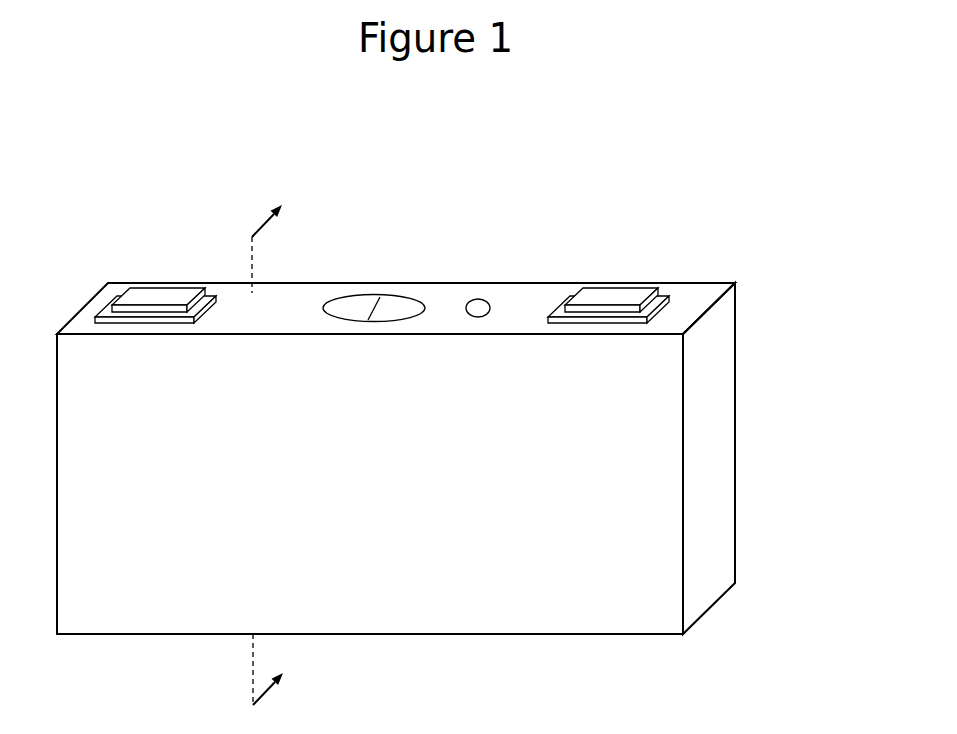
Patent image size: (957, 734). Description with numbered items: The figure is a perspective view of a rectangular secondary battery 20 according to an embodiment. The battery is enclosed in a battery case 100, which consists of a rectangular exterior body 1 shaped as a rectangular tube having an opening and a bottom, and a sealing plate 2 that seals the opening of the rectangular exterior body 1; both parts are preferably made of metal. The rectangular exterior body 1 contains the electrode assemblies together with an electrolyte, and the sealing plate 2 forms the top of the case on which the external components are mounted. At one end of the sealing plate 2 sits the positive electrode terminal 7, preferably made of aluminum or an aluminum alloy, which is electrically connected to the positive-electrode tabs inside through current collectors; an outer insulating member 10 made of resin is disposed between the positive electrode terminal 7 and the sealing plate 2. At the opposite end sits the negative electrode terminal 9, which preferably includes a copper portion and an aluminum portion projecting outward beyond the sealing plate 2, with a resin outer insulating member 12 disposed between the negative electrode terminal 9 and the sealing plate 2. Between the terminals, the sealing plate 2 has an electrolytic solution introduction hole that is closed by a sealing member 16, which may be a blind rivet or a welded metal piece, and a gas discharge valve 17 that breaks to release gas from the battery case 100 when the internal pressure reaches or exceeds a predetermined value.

The rectangular secondary battery 20 is at (224, 117).
The battery case 100 is at (790, 205).
The rectangular exterior body 1 is at (720, 377).
The sealing plate 2 is at (693, 297).
The positive electrode terminal 7 is at (627, 298).
The negative electrode terminal 9 is at (168, 300).
The outer insulating member 10 is at (553, 317).
The outer insulating member 12 is at (101, 320).
The sealing member 16 is at (482, 308).
The gas discharge valve 17 is at (390, 303).